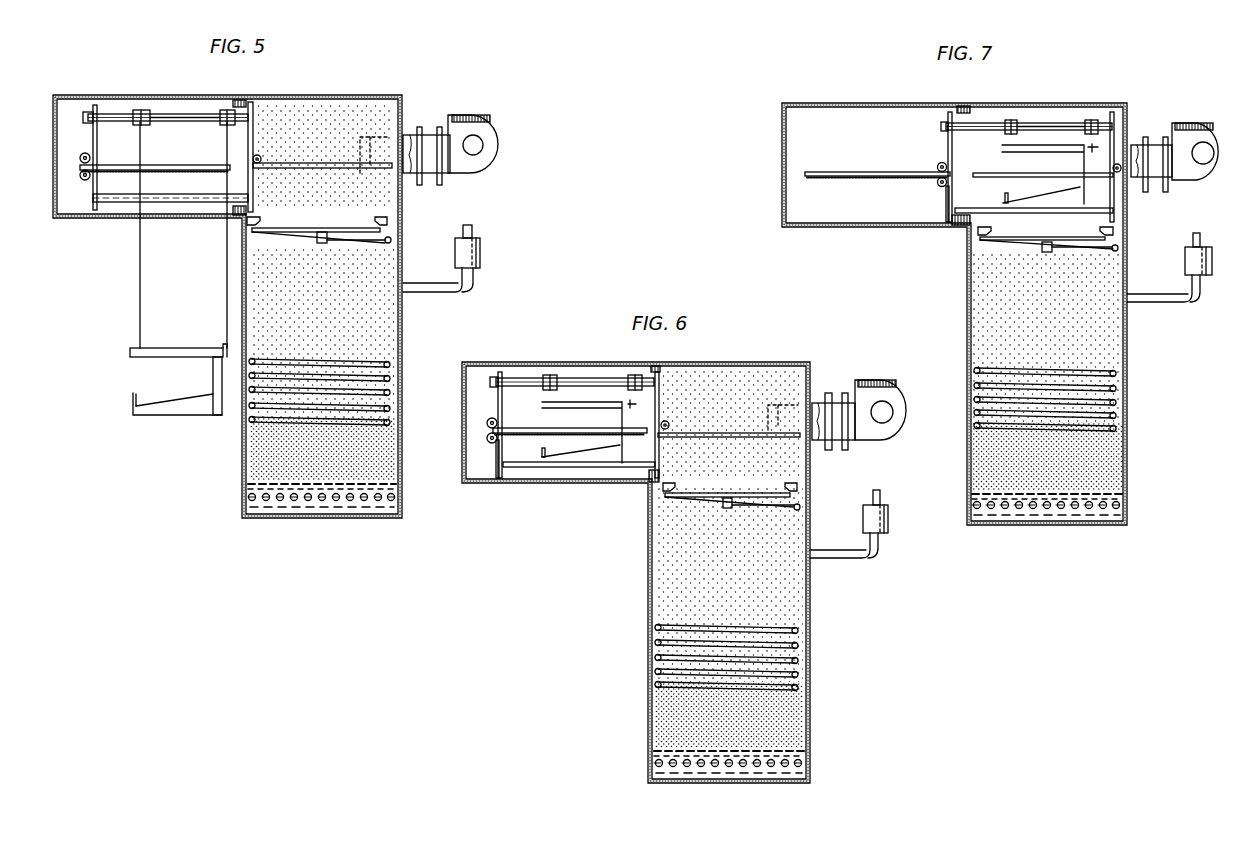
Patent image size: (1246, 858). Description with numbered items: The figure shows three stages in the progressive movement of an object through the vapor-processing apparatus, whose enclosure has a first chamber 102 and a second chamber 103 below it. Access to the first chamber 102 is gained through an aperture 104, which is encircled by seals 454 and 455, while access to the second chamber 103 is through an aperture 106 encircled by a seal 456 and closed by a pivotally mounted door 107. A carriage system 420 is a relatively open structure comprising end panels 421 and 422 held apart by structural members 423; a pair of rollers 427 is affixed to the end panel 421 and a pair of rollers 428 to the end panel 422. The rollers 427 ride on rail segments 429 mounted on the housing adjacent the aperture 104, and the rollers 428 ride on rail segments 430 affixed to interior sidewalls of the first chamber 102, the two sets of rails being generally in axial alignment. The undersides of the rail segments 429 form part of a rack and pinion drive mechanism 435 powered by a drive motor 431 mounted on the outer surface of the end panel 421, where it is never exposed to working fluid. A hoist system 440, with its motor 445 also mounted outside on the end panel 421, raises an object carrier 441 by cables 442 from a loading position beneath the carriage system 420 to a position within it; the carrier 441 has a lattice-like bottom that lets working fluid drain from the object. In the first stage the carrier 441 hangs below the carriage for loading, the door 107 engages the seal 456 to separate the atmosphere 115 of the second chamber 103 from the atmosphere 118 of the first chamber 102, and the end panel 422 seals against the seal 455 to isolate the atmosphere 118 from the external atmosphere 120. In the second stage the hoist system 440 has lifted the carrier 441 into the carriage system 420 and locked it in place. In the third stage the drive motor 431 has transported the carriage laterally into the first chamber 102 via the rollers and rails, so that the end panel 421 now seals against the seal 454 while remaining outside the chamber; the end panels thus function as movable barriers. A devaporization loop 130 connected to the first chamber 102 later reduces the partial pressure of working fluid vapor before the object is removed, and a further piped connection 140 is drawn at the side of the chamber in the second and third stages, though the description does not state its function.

In FIG. 5, the first chamber 102 is at (394, 96).
In FIG. 6, the first chamber 102 is at (762, 363).
In FIG. 7, the first chamber 102 is at (1080, 104).
In FIG. 5, the second chamber 103 is at (242, 462).
In FIG. 6, the second chamber 103 is at (808, 683).
In FIG. 7, the second chamber 103 is at (1047, 527).
In FIG. 5, the aperture 104 is at (240, 170).
In FIG. 7, the aperture 104 is at (960, 140).
In FIG. 5, the aperture 106 is at (310, 222).
In FIG. 6, the aperture 106 is at (770, 487).
In FIG. 7, the aperture 106 is at (1045, 233).
In FIG. 5, the pivotally mounted door 107 is at (320, 244).
In FIG. 6, the pivotally mounted door 107 is at (742, 496).
In FIG. 7, the pivotally mounted door 107 is at (1043, 253).
In FIG. 5, the atmosphere 115 is at (378, 305).
In FIG. 5, the atmosphere 118 is at (392, 108).
In FIG. 5, the external atmosphere 120 is at (123, 208).
In FIG. 5, the devaporization loop 130 is at (496, 143).
In FIG. 6, the devaporization loop 130 is at (868, 432).
In FIG. 7, the devaporization loop 130 is at (1194, 175).
In FIG. 6, the drain pipe 140 is at (872, 560).
In FIG. 7, the drain pipe 140 is at (1190, 303).
In FIG. 5, the carriage system 420 is at (155, 151).
In FIG. 6, the carriage system 420 is at (546, 421).
In FIG. 7, the carriage system 420 is at (955, 159).
In FIG. 7, the end panel 421 is at (958, 106).
In FIG. 5, the end panel 422 is at (255, 138).
In FIG. 6, the end panel 422 is at (660, 450).
In FIG. 7, the end panel 422 is at (1113, 112).
In FIG. 5, the structural members 423 is at (183, 113).
In FIG. 7, the structural members 423 is at (1042, 123).
In FIG. 5, the rollers 427 is at (85, 158).
In FIG. 6, the rollers 427 is at (487, 437).
In FIG. 7, the rollers 427 is at (943, 162).
In FIG. 5, the rollers 428 is at (257, 159).
In FIG. 6, the rollers 428 is at (668, 420).
In FIG. 7, the rollers 428 is at (1120, 172).
In FIG. 5, the rail segments 429 is at (125, 165).
In FIG. 6, the rail segments 429 is at (525, 428).
In FIG. 7, the rail segments 429 is at (810, 171).
In FIG. 5, the rail segments 430 is at (378, 172).
In FIG. 6, the rail segments 430 is at (735, 432).
In FIG. 7, the rail segments 430 is at (988, 172).
In FIG. 5, the drive motor 431 is at (85, 175).
In FIG. 6, the drive motor 431 is at (487, 421).
In FIG. 7, the drive motor 431 is at (938, 166).
In FIG. 6, the rack and pinion drive mechanism 435 is at (494, 446).
In FIG. 7, the rack and pinion drive mechanism 435 is at (940, 186).
In FIG. 5, the hoist system 440 is at (140, 110).
In FIG. 6, the hoist system 440 is at (548, 376).
In FIG. 7, the hoist system 440 is at (1029, 127).
In FIG. 5, the object carrier 441 is at (196, 412).
In FIG. 6, the object carrier 441 is at (582, 470).
In FIG. 7, the object carrier 441 is at (1003, 197).
In FIG. 5, the cables 442 is at (139, 314).
In FIG. 5, the motor 445 is at (93, 108).
In FIG. 6, the motor 445 is at (496, 376).
In FIG. 6, the seal 454 is at (652, 482).
In FIG. 7, the seal 454 is at (956, 226).
In FIG. 5, the seal 455 is at (247, 100).
In FIG. 5, the seal 456 is at (242, 222).